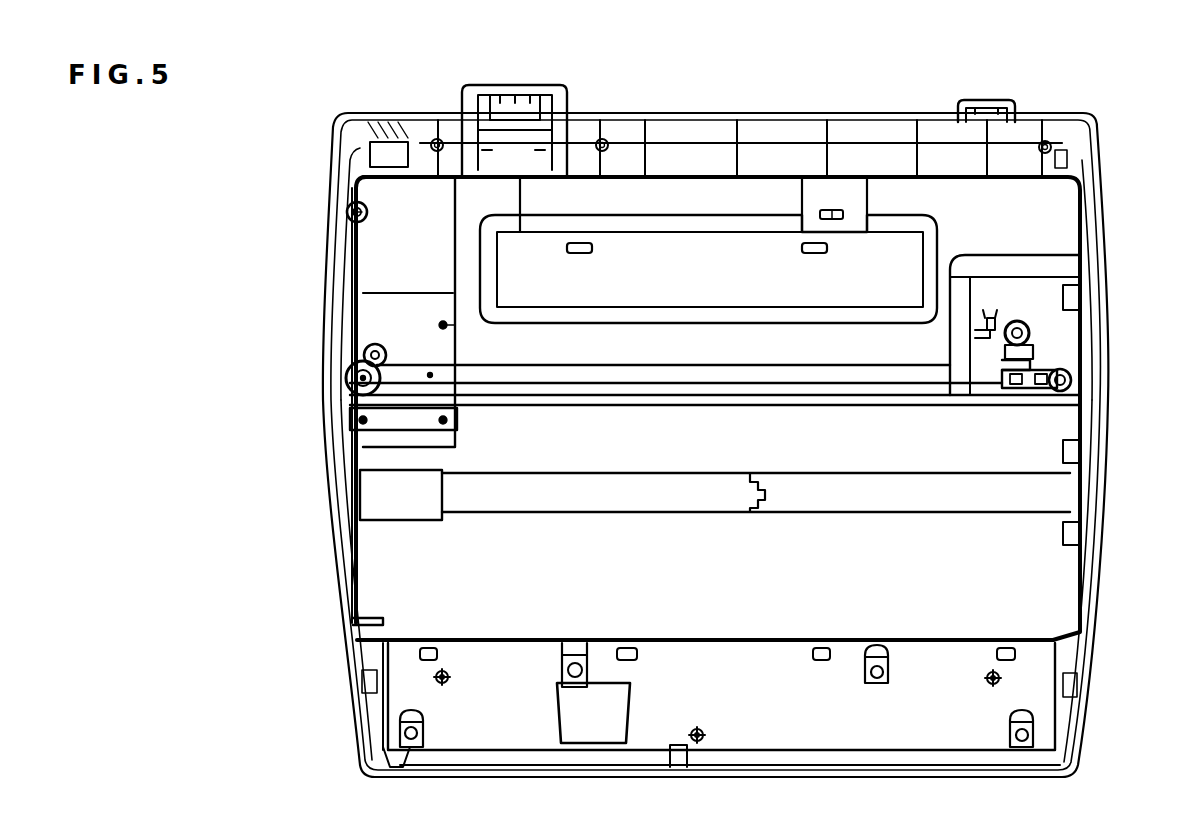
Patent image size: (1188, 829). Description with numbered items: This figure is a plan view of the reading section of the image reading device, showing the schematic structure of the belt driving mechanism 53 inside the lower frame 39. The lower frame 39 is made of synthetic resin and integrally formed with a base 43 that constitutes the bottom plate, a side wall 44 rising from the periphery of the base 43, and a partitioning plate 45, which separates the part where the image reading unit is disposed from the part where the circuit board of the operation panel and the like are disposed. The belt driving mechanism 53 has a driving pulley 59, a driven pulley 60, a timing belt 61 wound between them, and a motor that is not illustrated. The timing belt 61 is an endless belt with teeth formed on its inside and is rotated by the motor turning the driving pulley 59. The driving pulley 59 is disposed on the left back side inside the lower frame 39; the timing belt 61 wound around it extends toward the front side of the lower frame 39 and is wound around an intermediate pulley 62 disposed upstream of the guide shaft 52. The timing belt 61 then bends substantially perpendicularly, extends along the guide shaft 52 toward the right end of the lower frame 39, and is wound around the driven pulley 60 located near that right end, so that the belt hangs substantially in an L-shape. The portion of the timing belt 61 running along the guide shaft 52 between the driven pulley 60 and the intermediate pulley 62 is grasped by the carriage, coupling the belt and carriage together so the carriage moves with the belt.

The lower frame 39 is at (345, 701).
The base 43 is at (734, 597).
The side wall 44 is at (1083, 428).
The partitioning plate 45 is at (697, 643).
The guide shaft 52 is at (679, 406).
The belt driving mechanism 53 is at (1050, 345).
The driving pulley 59 is at (368, 212).
The driven pulley 60 is at (1060, 395).
The timing belt 61 is at (626, 365).
The intermediate pulley 62 is at (385, 341).